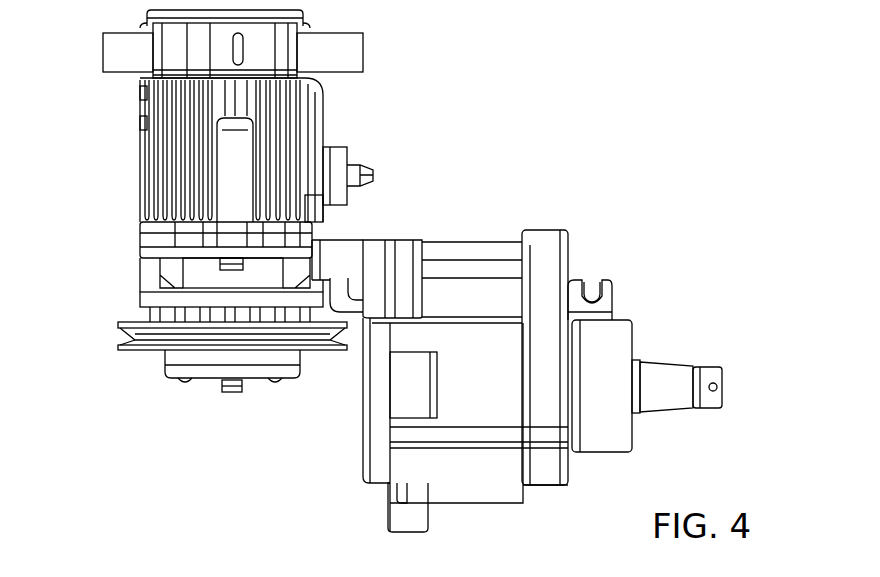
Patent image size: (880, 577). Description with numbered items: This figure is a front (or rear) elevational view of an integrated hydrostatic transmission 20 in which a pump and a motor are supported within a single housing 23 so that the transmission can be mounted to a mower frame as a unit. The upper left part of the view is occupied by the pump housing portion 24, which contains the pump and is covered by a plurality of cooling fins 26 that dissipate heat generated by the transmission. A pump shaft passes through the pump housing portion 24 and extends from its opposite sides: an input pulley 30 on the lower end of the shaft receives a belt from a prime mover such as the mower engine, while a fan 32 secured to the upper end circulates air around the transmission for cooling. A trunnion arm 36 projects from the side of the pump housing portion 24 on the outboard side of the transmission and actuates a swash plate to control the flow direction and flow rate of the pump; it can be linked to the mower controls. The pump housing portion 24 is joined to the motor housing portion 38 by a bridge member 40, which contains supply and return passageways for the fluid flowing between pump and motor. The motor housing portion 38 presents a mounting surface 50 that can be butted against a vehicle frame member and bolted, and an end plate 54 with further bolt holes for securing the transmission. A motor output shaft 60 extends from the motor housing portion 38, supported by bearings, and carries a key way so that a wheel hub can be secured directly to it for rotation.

The integrated hydrostatic transmission 20 is at (487, 129).
The housing 23 is at (141, 170).
The pump housing portion 24 is at (325, 105).
The cooling fins 26 is at (148, 115).
The input pulley 30 is at (135, 352).
The fan 32 is at (355, 46).
The trunnion arm 36 is at (375, 178).
The motor housing portion 38 is at (498, 470).
The bridge member 40 is at (342, 258).
The mounting surface 50 is at (394, 237).
The end plate 54 is at (361, 393).
The motor output shaft 60 is at (667, 362).